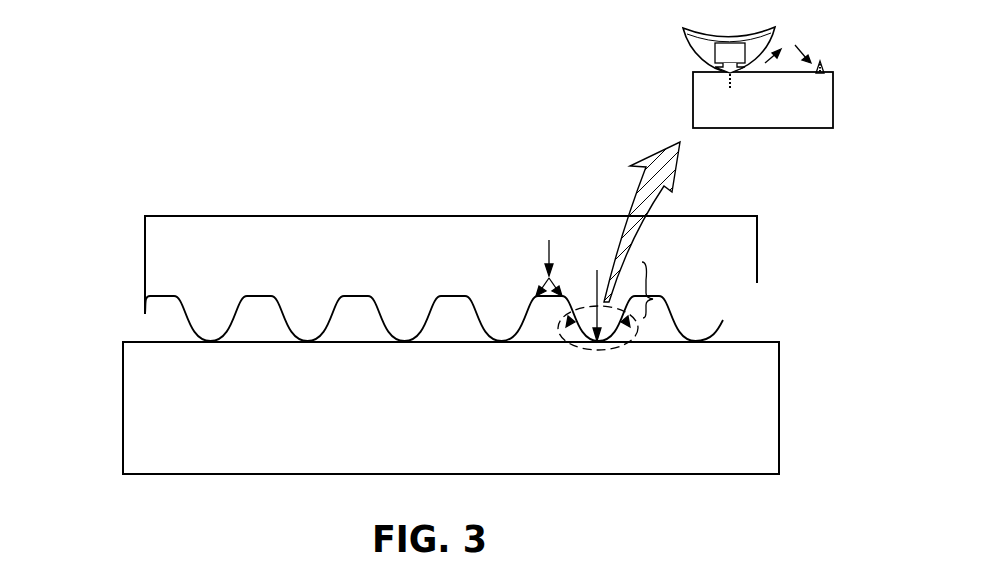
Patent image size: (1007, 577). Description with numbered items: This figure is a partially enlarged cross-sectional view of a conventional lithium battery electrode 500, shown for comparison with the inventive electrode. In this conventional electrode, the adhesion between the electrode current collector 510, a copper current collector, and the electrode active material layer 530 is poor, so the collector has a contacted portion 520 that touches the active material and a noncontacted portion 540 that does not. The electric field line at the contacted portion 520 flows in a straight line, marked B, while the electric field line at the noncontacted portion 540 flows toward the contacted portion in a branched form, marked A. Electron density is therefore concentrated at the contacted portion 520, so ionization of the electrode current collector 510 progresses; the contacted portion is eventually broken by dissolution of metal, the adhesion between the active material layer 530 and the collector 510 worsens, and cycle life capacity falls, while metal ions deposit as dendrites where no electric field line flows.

The negative electrode 500 is at (135, 190).
The electrode current collector 510 is at (770, 408).
The contacted portion 520 is at (618, 348).
The electrode active material layer 530 is at (750, 241).
The noncontacted portion 540 is at (543, 283).